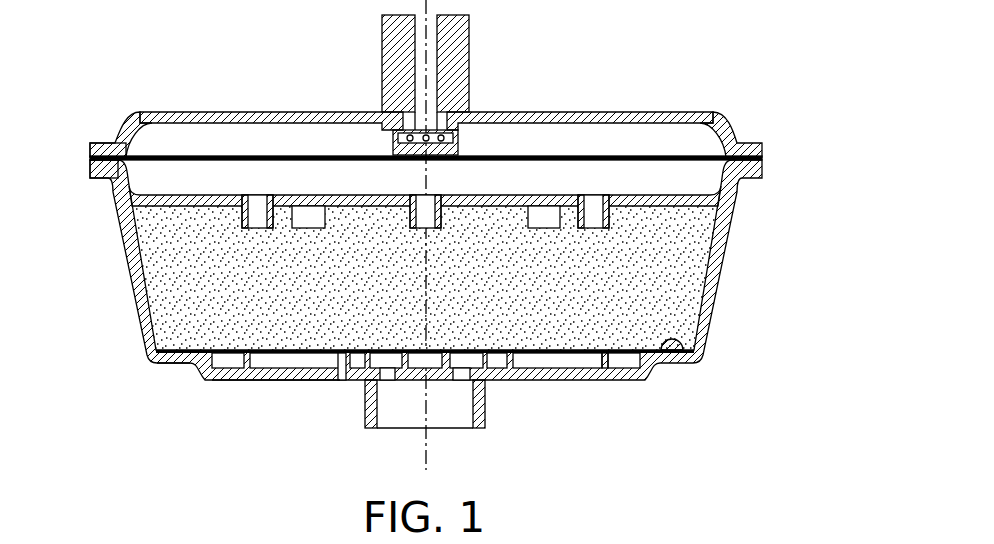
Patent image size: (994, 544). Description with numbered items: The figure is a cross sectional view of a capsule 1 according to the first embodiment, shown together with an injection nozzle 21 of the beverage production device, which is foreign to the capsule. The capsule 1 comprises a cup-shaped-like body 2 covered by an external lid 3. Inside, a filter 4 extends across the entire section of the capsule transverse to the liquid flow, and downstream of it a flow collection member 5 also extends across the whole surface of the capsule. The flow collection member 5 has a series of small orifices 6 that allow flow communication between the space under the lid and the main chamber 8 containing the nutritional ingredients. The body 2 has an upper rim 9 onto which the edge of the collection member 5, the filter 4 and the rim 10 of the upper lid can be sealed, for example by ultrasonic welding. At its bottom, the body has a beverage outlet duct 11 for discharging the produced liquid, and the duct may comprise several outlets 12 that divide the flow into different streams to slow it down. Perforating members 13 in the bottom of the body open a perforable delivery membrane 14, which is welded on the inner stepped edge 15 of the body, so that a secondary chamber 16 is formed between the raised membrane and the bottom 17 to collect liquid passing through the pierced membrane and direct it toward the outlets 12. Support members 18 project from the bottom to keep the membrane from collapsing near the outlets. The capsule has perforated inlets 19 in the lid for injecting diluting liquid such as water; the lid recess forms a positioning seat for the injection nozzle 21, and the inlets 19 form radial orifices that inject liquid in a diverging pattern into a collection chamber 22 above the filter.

The capsule 1 is at (128, 378).
The cup-shaped-like body 2 is at (722, 262).
The external lid 3 is at (230, 112).
The filter 4 is at (128, 126).
The flow collection member 5 is at (619, 193).
The orifices 6 is at (596, 213).
The main chamber 8 is at (697, 319).
The upper rim 9 is at (90, 171).
The rim of the upper lid 10 is at (90, 150).
The beverage outlet duct 11 is at (390, 428).
The outlets 12 is at (388, 377).
The perforating members 13 is at (603, 360).
The perforable delivery membrane 14 is at (669, 353).
The inner stepped edge 15 is at (176, 372).
The secondary chamber 16 is at (548, 362).
The bottom 17 is at (248, 381).
The support members 18 is at (360, 358).
The perforated inlets 19 is at (460, 136).
The injection nozzle 21 is at (471, 26).
The collection chamber 22 is at (690, 136).